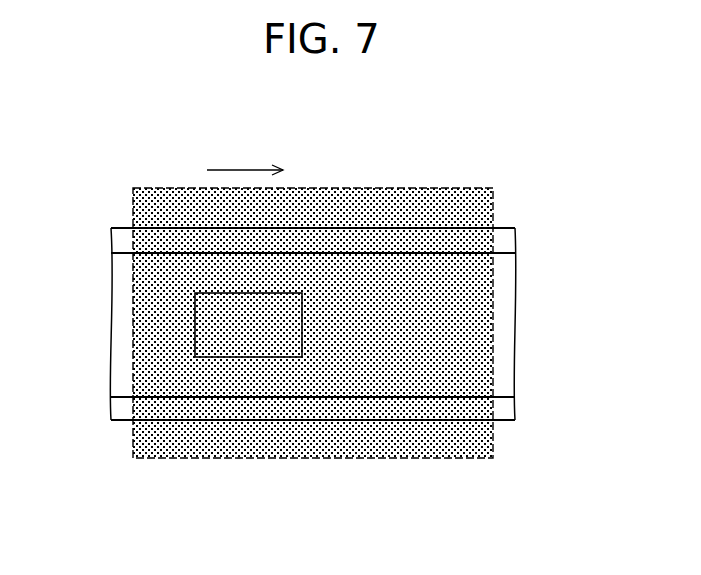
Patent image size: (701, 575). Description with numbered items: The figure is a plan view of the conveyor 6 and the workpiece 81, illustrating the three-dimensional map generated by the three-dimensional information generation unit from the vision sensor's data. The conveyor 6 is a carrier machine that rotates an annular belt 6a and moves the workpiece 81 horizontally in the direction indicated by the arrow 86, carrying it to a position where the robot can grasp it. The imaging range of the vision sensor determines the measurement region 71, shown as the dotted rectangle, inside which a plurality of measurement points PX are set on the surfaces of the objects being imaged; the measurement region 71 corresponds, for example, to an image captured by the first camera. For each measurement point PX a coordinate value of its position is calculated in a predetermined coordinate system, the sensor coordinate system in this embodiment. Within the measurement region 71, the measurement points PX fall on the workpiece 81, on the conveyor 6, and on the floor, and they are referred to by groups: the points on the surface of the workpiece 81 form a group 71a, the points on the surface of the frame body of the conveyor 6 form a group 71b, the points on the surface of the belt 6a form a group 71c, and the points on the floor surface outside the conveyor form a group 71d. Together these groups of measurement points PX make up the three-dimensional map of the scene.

The conveyor 6 is at (345, 292).
The annular belt 6a is at (503, 273).
The measurement region 71 is at (316, 326).
The group of measurement points on workpiece surface 71a is at (210, 332).
The group of measurement points on conveyor frame body 71b is at (167, 245).
The group of measurement points on belt surface 71c is at (473, 338).
The group of measurement points on floor surface 71d is at (150, 203).
The workpiece 81 is at (281, 292).
The arrow 86 is at (237, 168).
The measurement point PX is at (448, 412).